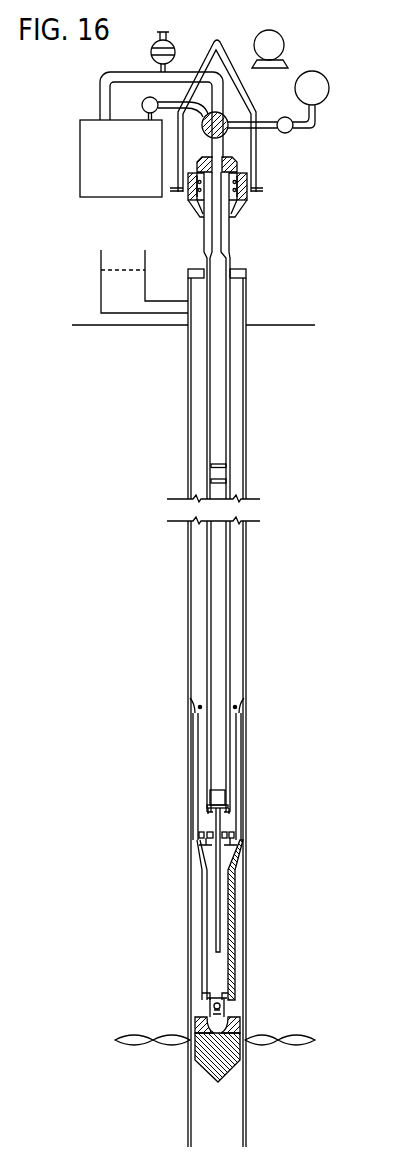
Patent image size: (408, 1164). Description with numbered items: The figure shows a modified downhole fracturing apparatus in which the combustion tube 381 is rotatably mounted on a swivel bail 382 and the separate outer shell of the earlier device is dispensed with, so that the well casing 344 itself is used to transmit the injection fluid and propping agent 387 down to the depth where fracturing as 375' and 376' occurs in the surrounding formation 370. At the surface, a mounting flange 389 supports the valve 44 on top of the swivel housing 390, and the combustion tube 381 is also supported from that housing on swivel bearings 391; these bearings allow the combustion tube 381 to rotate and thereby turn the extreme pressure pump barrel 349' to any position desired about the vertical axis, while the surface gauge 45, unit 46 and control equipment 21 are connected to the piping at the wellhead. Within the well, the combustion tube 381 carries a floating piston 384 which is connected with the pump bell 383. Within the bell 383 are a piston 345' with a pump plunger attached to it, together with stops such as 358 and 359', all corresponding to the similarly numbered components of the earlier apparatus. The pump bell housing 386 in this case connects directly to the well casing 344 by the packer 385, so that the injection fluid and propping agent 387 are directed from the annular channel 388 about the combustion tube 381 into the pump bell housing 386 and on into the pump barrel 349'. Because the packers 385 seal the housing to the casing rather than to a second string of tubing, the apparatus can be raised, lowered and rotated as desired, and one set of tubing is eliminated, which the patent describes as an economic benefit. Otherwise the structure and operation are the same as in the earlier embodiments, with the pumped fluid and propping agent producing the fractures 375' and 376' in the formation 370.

The control unit 21 is at (143, 156).
The valve 44 is at (228, 118).
The pressure gauge 45 is at (176, 49).
The pump 46 is at (286, 40).
The swivel bail 382 is at (217, 42).
The injection fluid and propping agent 387 is at (126, 253).
The mounting flange 389 is at (237, 162).
The swivel housing 390 is at (195, 212).
The swivel bearing 391 is at (240, 200).
The combustion tube 381 is at (229, 392).
The well casing 344 is at (246, 424).
The floating piston 384 is at (215, 475).
The annular channel 388 is at (200, 568).
The packer 385 is at (198, 712).
The stop 358 is at (215, 730).
The pump bell 383 is at (205, 755).
The pump bell housing 386 is at (233, 773).
The piston 345' is at (180, 793).
The stop 359' is at (251, 821).
The pump barrel 349' is at (251, 920).
The fracturing 375' is at (192, 1009).
The fracturing 376' is at (191, 1023).
The formation 370 is at (122, 1096).